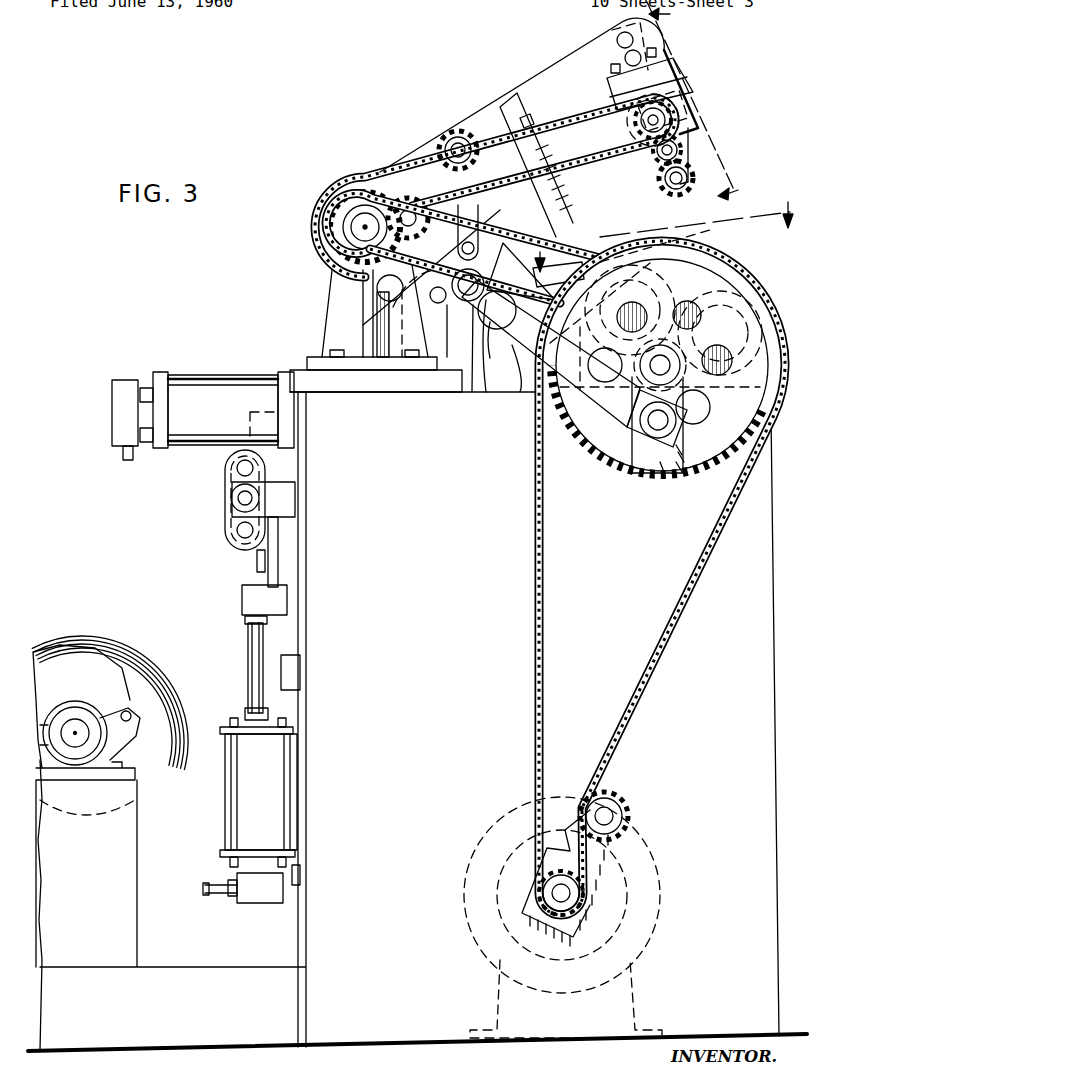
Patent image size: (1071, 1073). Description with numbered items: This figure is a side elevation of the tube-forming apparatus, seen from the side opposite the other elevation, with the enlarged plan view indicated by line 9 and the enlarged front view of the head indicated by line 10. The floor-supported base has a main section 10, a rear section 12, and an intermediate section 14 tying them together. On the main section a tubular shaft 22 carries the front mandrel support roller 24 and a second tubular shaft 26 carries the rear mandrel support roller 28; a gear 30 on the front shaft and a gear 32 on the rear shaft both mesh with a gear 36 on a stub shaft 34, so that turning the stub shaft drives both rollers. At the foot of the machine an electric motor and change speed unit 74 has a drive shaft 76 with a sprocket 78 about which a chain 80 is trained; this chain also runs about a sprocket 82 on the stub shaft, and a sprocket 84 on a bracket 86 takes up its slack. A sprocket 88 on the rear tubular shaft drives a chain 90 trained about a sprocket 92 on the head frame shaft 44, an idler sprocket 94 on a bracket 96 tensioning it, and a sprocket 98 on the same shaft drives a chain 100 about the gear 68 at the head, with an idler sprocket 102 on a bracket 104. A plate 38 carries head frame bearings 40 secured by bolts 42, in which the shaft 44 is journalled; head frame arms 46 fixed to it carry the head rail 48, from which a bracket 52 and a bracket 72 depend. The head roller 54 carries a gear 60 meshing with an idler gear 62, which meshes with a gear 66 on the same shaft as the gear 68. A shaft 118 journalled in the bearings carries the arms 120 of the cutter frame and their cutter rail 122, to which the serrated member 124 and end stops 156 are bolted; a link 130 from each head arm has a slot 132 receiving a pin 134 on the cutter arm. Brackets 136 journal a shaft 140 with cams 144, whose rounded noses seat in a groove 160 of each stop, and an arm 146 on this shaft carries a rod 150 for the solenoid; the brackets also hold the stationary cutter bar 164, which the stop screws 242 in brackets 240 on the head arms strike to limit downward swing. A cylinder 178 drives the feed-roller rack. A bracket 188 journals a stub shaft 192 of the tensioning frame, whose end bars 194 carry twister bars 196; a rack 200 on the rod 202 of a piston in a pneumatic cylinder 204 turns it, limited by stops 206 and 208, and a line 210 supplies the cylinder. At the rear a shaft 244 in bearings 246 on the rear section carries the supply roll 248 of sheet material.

The line 9— 9 is at (663, 238).
The main section 10 is at (704, 101).
The rear base section 12 is at (64, 912).
The intermediate section 14 is at (222, 967).
The tubular shaft 22 is at (736, 262).
The front mandrel support roller 24 is at (752, 288).
The second tubular shaft 26 is at (648, 241).
The rear mandrel support roller 28 is at (700, 249).
The gear 30 is at (758, 310).
The gear 32 is at (540, 392).
The stub shaft 34 is at (612, 402).
The gear 36 is at (702, 404).
The plate 38 is at (345, 392).
The head frame bearings 40 is at (328, 316).
The bolts 42 is at (326, 352).
The shaft 44 is at (358, 228).
The head frame arms 46 is at (556, 78).
The head rail 48 is at (672, 76).
The bracket 52 is at (696, 152).
The head roller 54 is at (687, 204).
The gear 60 is at (705, 174).
The idler gear 62 is at (690, 136).
The gear 66 is at (637, 131).
The gear (sprocket) 68 is at (631, 169).
The bracket 72 is at (686, 103).
The electric motor and change speed unit 74 is at (650, 893).
The drive shaft 76 is at (550, 893).
The sprocket 78 is at (552, 882).
The chain 80 is at (690, 591).
The sprocket 82 is at (655, 478).
The sprocket 84 is at (620, 801).
The bracket 86 is at (560, 832).
The sprocket 88 is at (632, 347).
The chain 90 is at (565, 241).
The sprocket 92 is at (450, 224).
The idler sprocket 94 is at (468, 302).
The bracket 96 is at (498, 320).
The sprocket 98 is at (394, 173).
The chain 100 is at (500, 156).
The idler sprocket 102 is at (456, 130).
The bracket 104 is at (436, 160).
The shaft 118 is at (377, 290).
The arms of cutter frame 120 is at (412, 300).
The cutter rail 122 is at (576, 213).
The member having serrated cutting edge 124 is at (578, 198).
The link 130 is at (496, 205).
The slot 132 is at (466, 207).
The pin 134 is at (370, 321).
The brackets 136 is at (509, 380).
The shaft 140 is at (490, 346).
The cams 144 is at (497, 272).
The arm 146 is at (470, 380).
The rod 150 is at (432, 370).
The stop 156 is at (548, 140).
The groove 160 is at (555, 216).
The stationary cutter bar 164 is at (615, 250).
The cylinder 178 is at (227, 382).
The bracket 188 is at (292, 478).
The stub shaft 192 is at (238, 502).
The end bars 194 is at (232, 477).
The twister bars 196 is at (238, 534).
The rack 200 is at (280, 566).
The rod 202 is at (250, 650).
The pneumatic cylinder 204 is at (240, 795).
The stop 206 is at (255, 566).
The stop 208 is at (300, 676).
The line 210 is at (208, 893).
The brackets 240 is at (510, 98).
The stop screws 242 is at (581, 183).
The shaft 244 is at (78, 740).
The bearings 246 is at (95, 705).
The supply roll of sheet material 248 is at (84, 642).